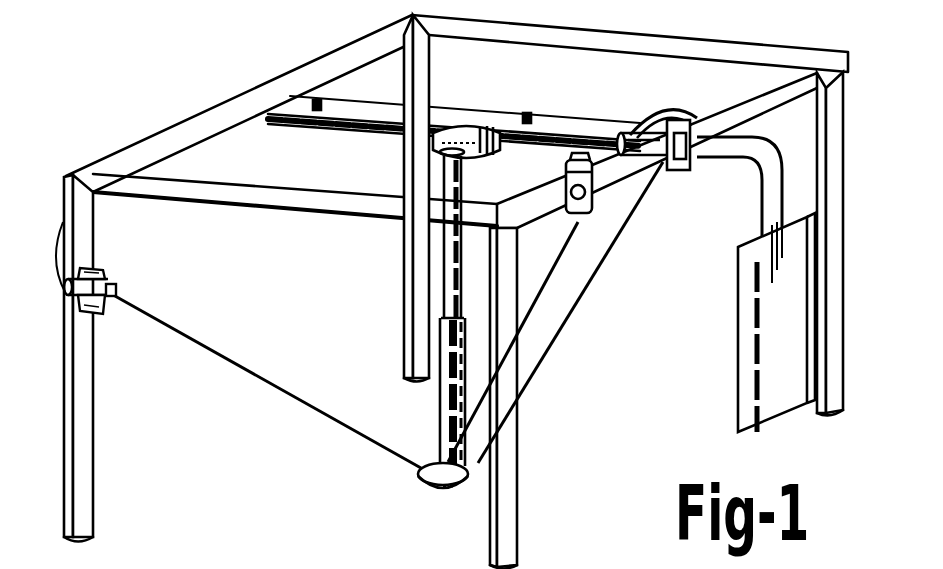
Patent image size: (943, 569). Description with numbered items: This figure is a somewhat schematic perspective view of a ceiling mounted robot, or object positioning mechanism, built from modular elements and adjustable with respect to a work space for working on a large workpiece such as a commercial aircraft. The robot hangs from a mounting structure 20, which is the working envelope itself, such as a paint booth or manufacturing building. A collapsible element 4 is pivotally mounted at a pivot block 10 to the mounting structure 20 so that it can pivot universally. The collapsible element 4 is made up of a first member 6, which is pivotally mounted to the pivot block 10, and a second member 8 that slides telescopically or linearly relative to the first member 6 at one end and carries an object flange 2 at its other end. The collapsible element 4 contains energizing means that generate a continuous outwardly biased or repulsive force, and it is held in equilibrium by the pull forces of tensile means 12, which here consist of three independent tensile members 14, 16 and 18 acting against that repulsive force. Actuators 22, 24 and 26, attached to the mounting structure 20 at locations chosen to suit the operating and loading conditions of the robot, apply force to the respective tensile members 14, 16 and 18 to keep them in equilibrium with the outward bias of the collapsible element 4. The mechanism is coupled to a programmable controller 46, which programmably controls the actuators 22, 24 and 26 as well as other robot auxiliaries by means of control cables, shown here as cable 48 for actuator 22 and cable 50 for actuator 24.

The object flange 2 is at (427, 490).
The collapsible element 4 is at (422, 319).
The first member 6 is at (470, 182).
The second member 8 is at (436, 392).
The pivot block 10 is at (470, 118).
The tensile means 12 is at (268, 382).
The tensile member 14 is at (320, 410).
The tensile member 16 is at (533, 372).
The tensile member 18 is at (527, 312).
The mounting structure 20 is at (322, 47).
The actuator 22 is at (584, 226).
The actuator 24 is at (674, 172).
The actuator 26 is at (103, 263).
The programmable controller 46 is at (752, 315).
The control cable 48 is at (757, 152).
The control cable 50 is at (756, 186).